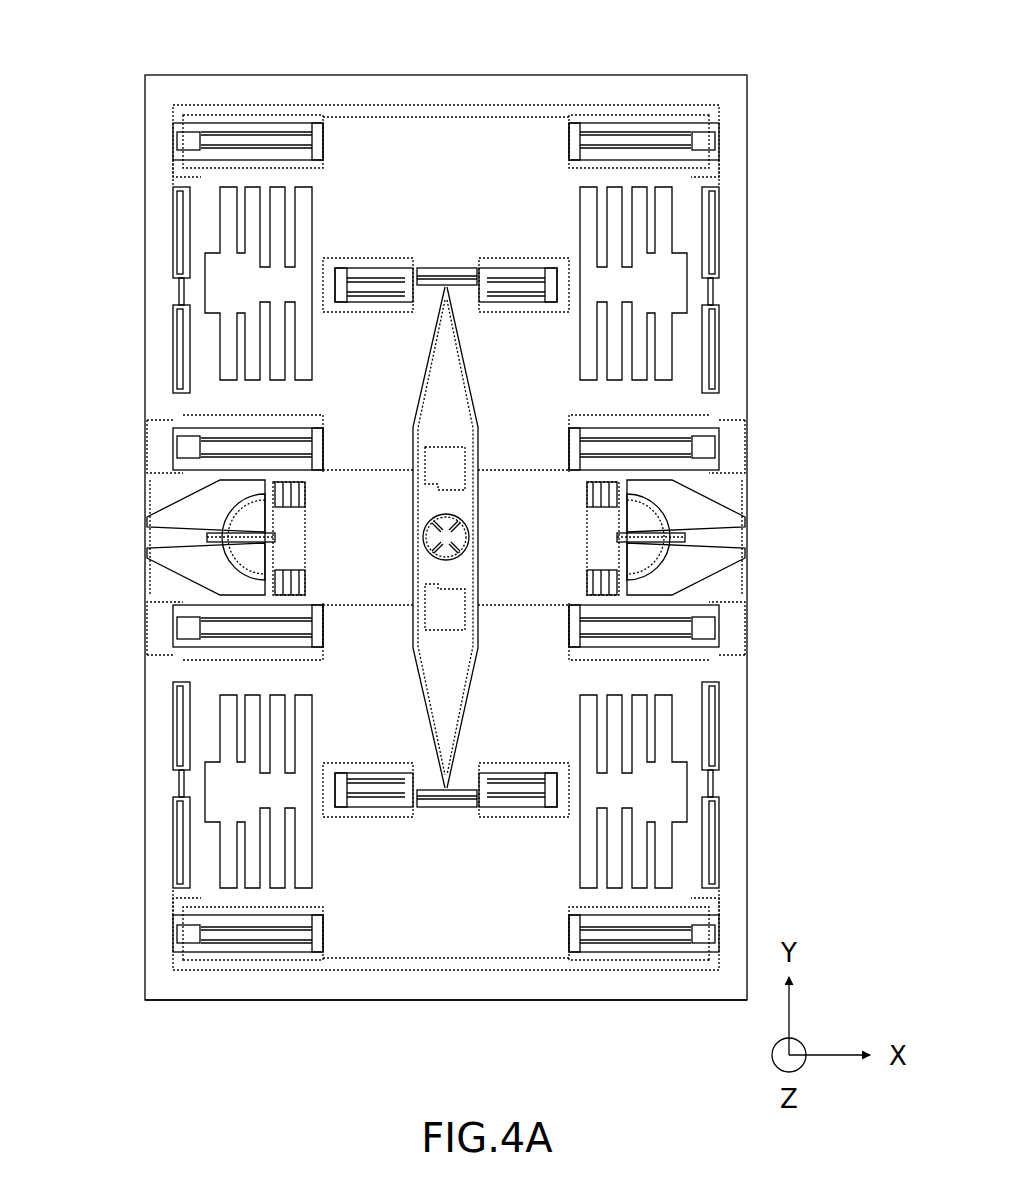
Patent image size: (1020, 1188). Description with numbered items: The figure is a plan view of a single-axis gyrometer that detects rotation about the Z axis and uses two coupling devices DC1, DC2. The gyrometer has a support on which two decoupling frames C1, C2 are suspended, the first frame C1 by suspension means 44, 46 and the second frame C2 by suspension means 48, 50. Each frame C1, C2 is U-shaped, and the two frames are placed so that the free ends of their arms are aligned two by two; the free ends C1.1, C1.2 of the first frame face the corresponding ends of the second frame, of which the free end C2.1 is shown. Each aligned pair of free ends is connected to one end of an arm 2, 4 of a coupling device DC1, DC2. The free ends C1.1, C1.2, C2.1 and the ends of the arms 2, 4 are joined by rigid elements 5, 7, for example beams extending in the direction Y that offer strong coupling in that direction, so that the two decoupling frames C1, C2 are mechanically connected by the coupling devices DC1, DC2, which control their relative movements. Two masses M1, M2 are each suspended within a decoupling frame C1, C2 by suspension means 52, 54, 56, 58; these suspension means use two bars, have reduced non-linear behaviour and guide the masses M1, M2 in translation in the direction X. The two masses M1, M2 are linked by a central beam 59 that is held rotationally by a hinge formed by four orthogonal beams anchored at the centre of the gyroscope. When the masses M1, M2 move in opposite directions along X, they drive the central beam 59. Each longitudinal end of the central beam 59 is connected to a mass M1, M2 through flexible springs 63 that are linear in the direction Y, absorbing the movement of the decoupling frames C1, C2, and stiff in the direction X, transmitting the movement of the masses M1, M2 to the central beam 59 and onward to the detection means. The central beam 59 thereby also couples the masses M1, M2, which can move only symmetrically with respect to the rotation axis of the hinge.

The decoupling frame C1 is at (703, 70).
The decoupling frame C2 is at (507, 1006).
The mass M1 is at (355, 968).
The mass M2 is at (415, 105).
The suspension means 46 is at (247, 110).
The suspension means 44 is at (622, 110).
The suspension means 48 is at (237, 963).
The suspension means 50 is at (622, 965).
The suspension means 52 is at (730, 224).
The suspension means 54 is at (163, 246).
The suspension means 56 is at (730, 726).
The suspension means 58 is at (163, 830).
The flexible spring 63 is at (446, 262).
The central beam 59 is at (482, 510).
The free end of frame arm C1.2 is at (160, 437).
The free end of frame arm C1.1 is at (725, 455).
The free end of frame arm C2.1 is at (725, 617).
The coupling device DC1 is at (575, 555).
The coupling device DC2 is at (140, 540).
The arm 2 is at (725, 520).
The arm 4 is at (748, 557).
The rigid element 5 is at (748, 492).
The rigid element 7 is at (748, 590).